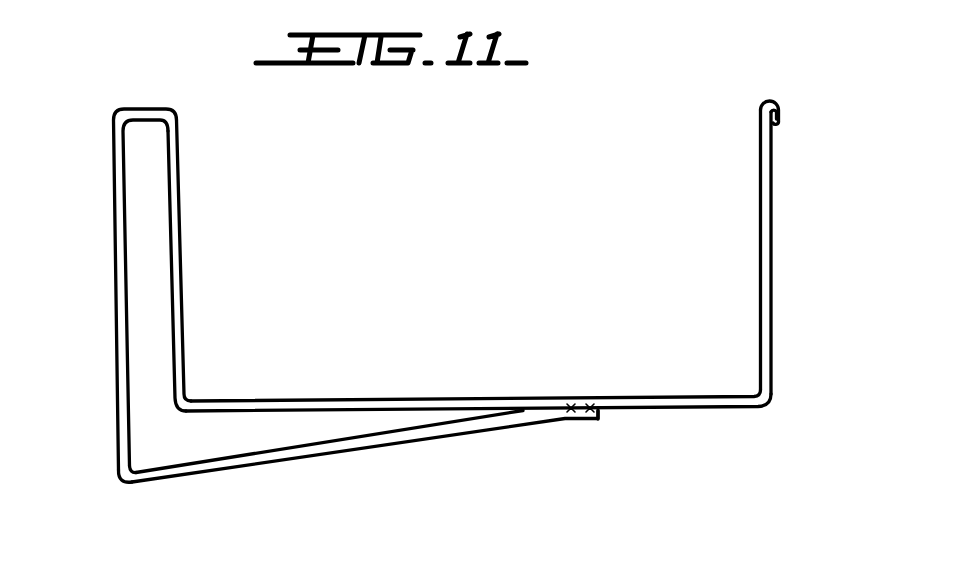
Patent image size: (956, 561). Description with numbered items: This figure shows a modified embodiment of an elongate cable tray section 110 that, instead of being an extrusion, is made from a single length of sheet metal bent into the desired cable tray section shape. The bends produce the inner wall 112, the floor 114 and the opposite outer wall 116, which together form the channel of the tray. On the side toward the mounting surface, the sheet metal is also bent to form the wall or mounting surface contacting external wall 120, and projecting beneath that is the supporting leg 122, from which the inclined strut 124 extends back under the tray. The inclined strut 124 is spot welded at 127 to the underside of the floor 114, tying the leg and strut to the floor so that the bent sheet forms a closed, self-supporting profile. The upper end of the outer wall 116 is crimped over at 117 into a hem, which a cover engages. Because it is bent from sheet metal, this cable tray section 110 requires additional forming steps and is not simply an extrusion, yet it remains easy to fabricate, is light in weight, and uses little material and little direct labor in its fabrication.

The elongate cable tray section 110 is at (378, 307).
The inner wall 112 is at (180, 256).
The floor 114 is at (452, 376).
The outer wall 116 is at (760, 276).
The hem 117 is at (781, 113).
The wall or mounting surface contacting external wall 120 is at (113, 328).
The supporting leg 122 is at (116, 442).
The inclined strut 124 is at (354, 450).
The spot weld 127 is at (586, 420).